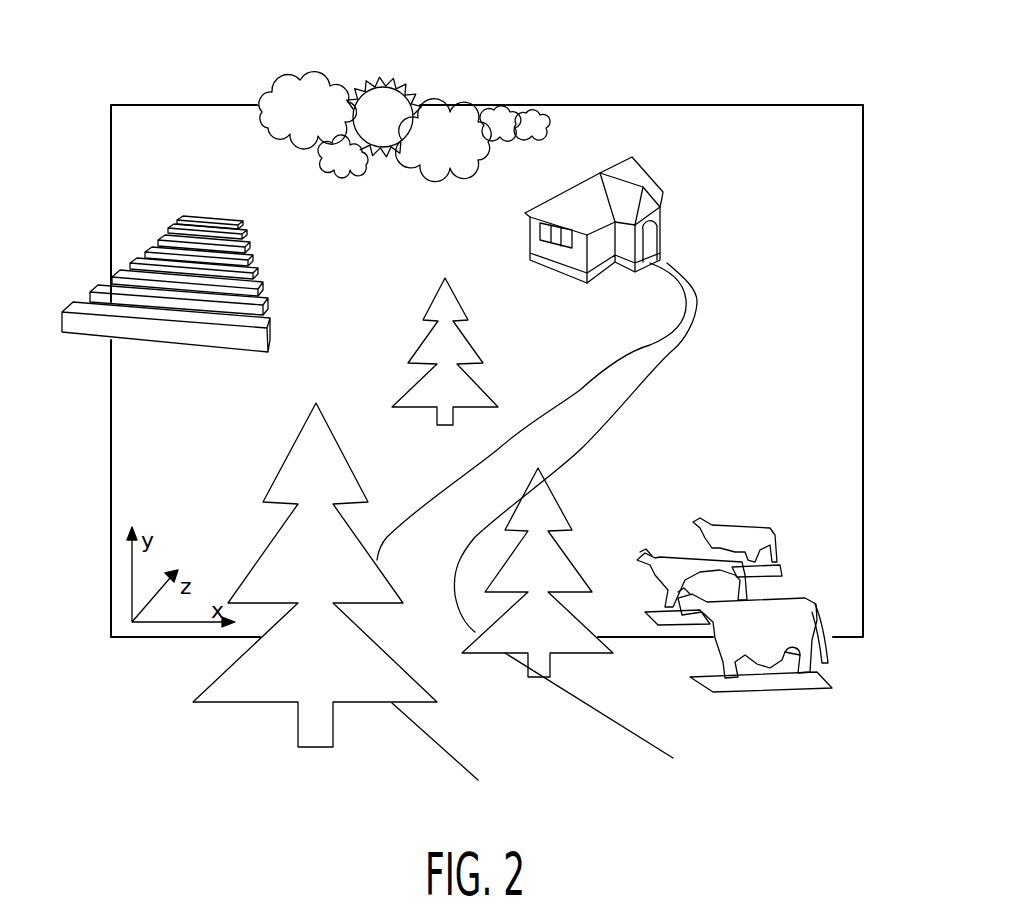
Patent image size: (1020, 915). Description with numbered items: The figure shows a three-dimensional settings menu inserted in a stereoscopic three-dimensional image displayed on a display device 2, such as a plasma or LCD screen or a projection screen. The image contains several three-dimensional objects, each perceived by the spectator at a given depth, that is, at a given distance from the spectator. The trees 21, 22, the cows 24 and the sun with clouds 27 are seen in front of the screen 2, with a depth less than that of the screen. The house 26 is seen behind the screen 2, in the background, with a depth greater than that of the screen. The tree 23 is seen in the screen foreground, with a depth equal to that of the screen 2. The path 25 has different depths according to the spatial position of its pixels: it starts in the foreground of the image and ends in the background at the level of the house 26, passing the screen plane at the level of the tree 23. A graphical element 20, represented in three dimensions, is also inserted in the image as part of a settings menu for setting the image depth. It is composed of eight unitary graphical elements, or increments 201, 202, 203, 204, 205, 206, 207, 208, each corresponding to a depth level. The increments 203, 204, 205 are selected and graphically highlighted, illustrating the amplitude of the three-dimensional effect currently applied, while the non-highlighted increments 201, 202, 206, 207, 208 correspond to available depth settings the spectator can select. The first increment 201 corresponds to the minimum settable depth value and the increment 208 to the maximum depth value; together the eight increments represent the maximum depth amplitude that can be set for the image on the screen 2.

The display device 2 is at (703, 105).
The graphical element 20 is at (212, 265).
The first increment 201 is at (190, 340).
The increment 202 is at (268, 312).
The increment 203 is at (262, 291).
The increment 204 is at (254, 273).
The increment 205 is at (148, 247).
The increment 206 is at (245, 247).
The increment 207 is at (175, 224).
The increment 208 is at (240, 223).
The three-dimensional object 21 is at (260, 703).
The three-dimensional object 22 is at (560, 500).
The tree 23 is at (487, 392).
The three-dimensional object 24 is at (753, 700).
The path 25 is at (683, 327).
The house 26 is at (663, 200).
The three-dimensional object 27 is at (395, 78).